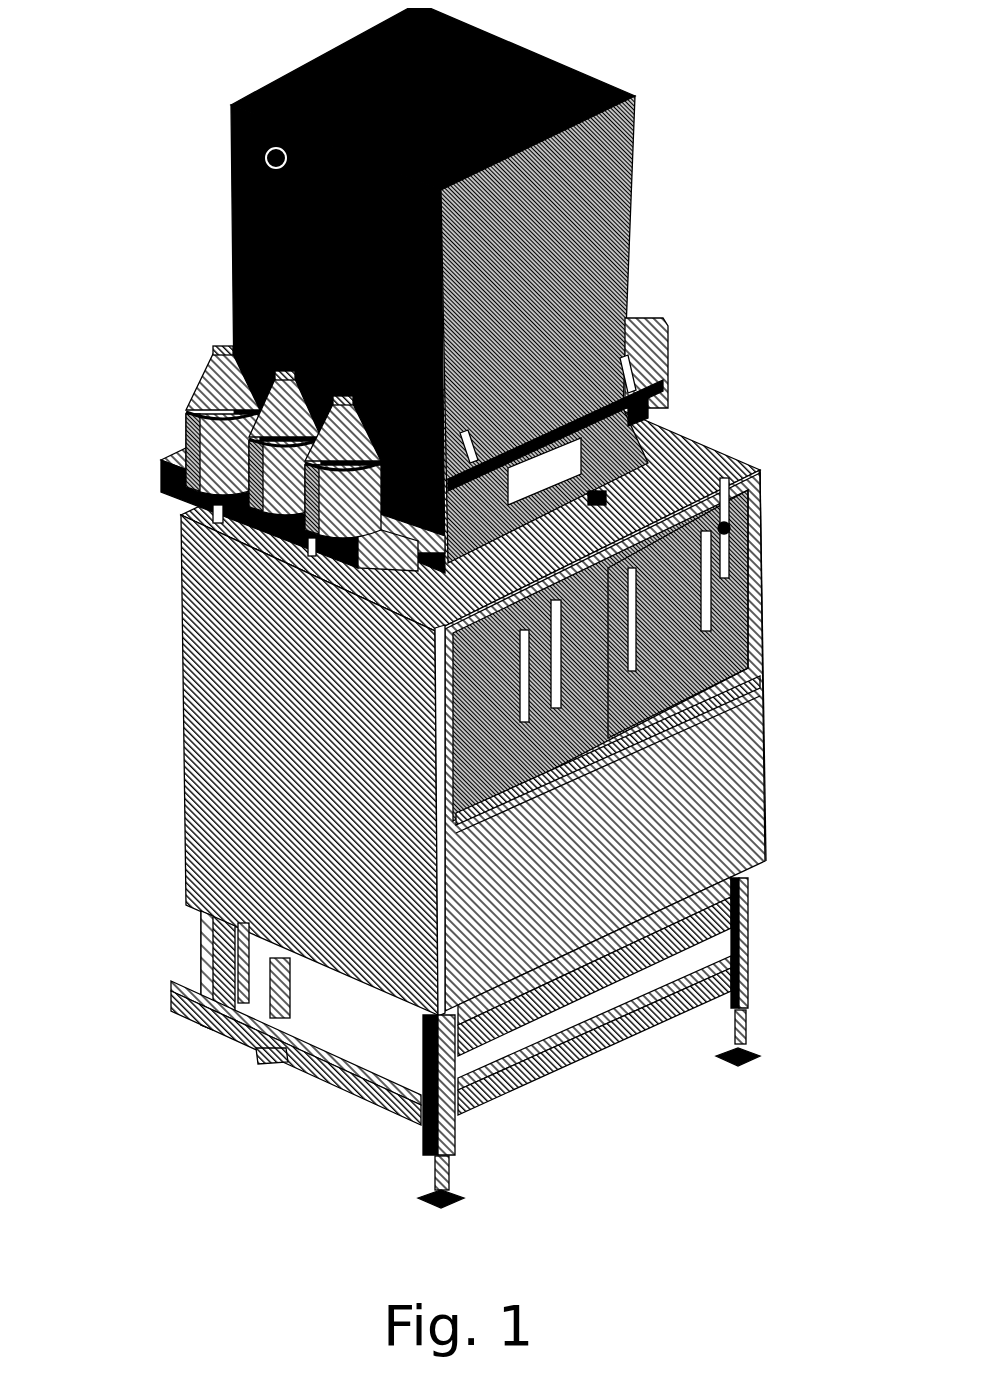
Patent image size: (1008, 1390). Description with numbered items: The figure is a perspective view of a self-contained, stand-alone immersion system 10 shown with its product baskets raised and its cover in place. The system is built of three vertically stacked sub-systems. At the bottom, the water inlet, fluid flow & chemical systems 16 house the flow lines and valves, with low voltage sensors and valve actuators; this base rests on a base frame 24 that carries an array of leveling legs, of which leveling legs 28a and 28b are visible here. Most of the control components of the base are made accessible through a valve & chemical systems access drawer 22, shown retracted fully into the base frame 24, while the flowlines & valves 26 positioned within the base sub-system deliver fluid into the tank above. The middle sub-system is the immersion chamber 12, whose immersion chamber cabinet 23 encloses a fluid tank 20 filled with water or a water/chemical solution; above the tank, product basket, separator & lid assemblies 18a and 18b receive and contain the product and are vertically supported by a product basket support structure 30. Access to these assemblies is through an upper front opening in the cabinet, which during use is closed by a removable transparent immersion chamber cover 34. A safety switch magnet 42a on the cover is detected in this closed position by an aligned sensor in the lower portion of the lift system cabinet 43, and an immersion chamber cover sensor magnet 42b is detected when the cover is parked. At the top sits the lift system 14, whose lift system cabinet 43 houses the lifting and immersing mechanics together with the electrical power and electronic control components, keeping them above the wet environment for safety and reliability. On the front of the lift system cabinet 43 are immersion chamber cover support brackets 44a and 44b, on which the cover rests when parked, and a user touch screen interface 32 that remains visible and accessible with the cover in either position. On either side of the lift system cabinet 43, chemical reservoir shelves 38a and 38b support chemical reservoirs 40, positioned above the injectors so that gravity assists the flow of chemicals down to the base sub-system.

The stand-alone immersion system 10 is at (117, 100).
The immersion chamber 12 is at (486, 688).
The lift system 14 is at (501, 290).
The water inlet, fluid flow & chemical systems 16 is at (489, 1040).
The product basket, separator & lid assembly 18a is at (490, 730).
The product basket, separator & lid assembly 18b is at (665, 635).
The fluid tank 20 is at (710, 830).
The valve & chemical systems access drawer 22 is at (565, 975).
The immersion chamber cabinet 23 is at (170, 732).
The base frame 24 is at (196, 947).
The flowlines & valves 26 is at (290, 1022).
The leveling leg 28a is at (455, 1150).
The leveling leg 28b is at (740, 1020).
The product basket support structure 30 is at (720, 520).
The user touch screen interface 32 is at (516, 455).
The immersion chamber cover 34 is at (668, 665).
The chemical reservoir shelf 38a is at (156, 474).
The chemical reservoir shelf 38b is at (662, 398).
The chemical reservoirs 40 is at (176, 363).
The safety switch magnet 42a is at (590, 487).
The immersion chamber cover sensor magnet 42b is at (627, 405).
The lift system cabinet 43 is at (226, 234).
The immersion chamber cover support bracket 44a is at (452, 420).
The immersion chamber cover support bracket 44b is at (612, 372).